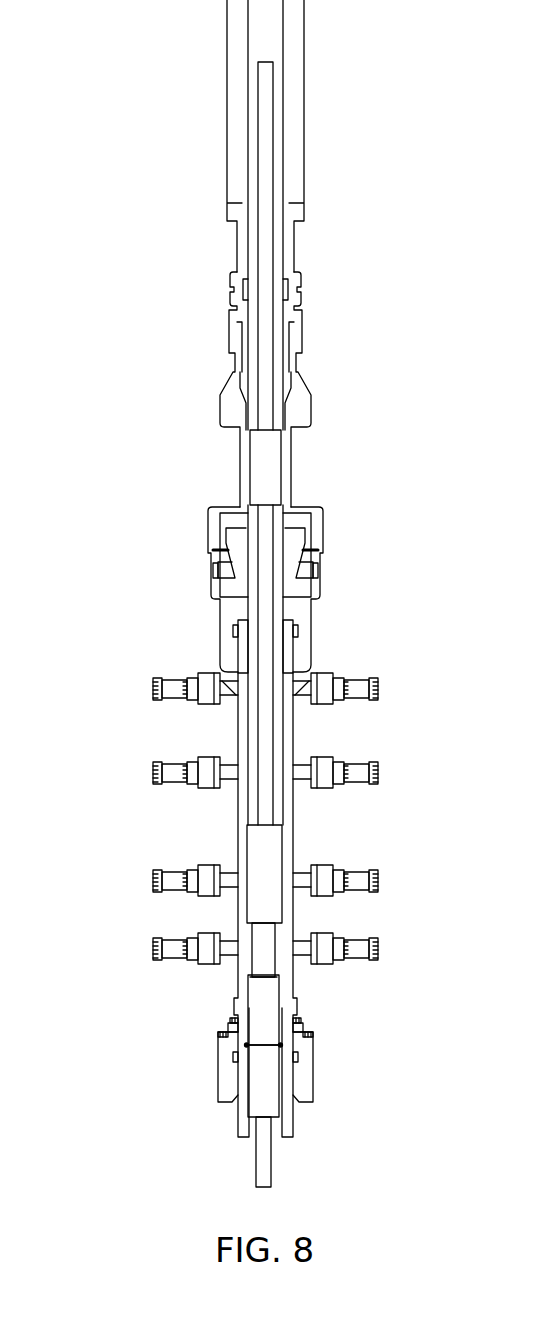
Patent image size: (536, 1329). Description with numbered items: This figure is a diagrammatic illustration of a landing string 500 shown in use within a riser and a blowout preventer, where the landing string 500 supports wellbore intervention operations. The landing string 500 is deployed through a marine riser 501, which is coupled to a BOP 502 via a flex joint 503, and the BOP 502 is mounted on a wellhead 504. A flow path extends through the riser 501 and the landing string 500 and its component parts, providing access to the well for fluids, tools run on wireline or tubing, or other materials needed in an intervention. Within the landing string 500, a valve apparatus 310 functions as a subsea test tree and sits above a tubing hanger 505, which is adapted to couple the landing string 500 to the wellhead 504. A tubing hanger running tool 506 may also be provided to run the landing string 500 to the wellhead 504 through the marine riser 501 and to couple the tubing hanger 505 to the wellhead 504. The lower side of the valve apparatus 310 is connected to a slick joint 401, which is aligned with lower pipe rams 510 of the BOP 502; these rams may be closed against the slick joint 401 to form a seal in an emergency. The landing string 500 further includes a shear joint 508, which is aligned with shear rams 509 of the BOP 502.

The landing string 500 is at (245, 302).
The marine riser 501 is at (305, 110).
The BOP 502 is at (150, 745).
The flex joint 503 is at (313, 418).
The wellhead 504 is at (310, 1070).
The tubing hanger 505 is at (267, 1012).
The tubing hanger running tool 506 is at (262, 1082).
The shear joint 508 is at (250, 660).
The shear rams 509 is at (348, 683).
The lower pipe rams 510 is at (352, 957).
The valve apparatus 310 is at (268, 845).
The slick joint 401 is at (265, 965).